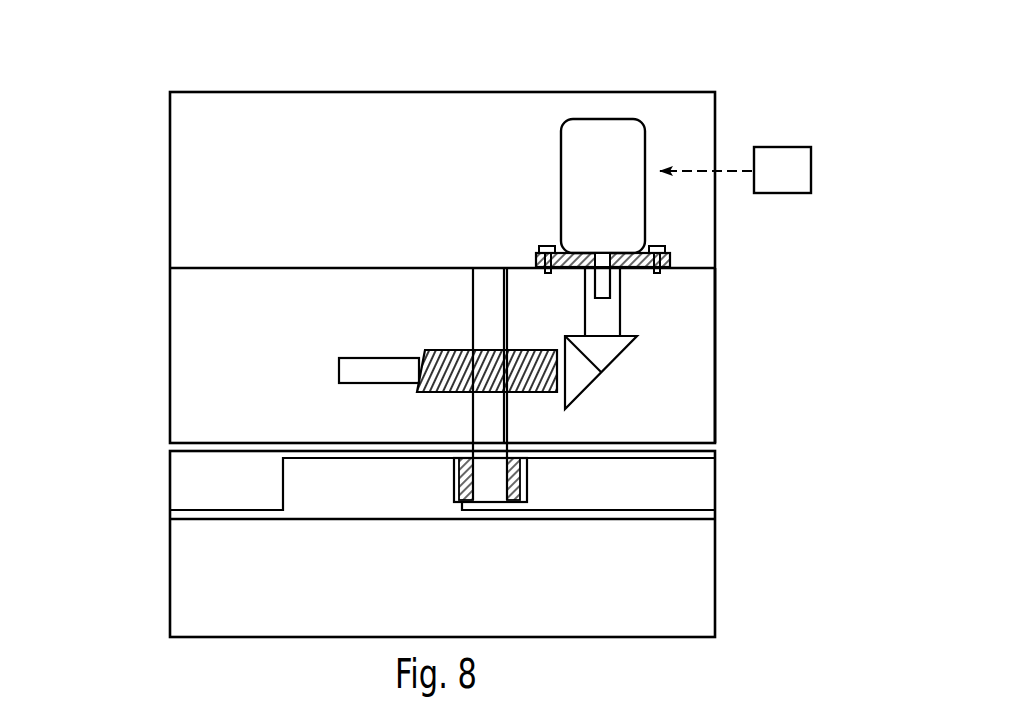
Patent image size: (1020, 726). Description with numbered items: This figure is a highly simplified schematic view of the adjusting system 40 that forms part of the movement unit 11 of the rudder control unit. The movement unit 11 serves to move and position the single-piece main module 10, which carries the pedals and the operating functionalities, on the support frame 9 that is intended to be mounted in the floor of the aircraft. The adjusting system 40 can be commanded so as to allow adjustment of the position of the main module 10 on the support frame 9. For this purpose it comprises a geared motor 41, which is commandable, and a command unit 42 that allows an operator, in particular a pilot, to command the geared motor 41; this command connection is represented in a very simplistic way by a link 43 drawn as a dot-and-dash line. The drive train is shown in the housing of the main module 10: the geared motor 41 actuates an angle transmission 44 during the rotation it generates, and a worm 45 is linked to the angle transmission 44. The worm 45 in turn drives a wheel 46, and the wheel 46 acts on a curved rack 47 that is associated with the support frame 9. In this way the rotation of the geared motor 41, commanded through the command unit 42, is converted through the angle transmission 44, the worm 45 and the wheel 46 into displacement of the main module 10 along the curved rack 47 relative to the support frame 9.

The movement unit 11 is at (124, 59).
The adjusting system 40 is at (304, 140).
The main module 10 is at (716, 333).
The geared motor 41 is at (645, 134).
The command unit 42 is at (790, 194).
The link 43 is at (724, 174).
The angle transmission 44 is at (633, 373).
The worm 45 is at (393, 396).
The support frame 9 is at (716, 481).
The curved rack 47 is at (358, 493).
The wheel 46 is at (535, 480).